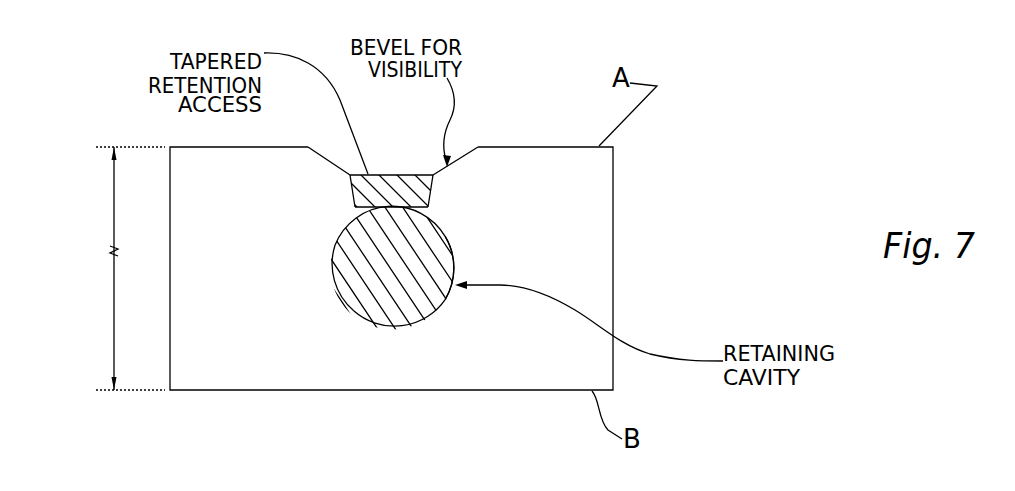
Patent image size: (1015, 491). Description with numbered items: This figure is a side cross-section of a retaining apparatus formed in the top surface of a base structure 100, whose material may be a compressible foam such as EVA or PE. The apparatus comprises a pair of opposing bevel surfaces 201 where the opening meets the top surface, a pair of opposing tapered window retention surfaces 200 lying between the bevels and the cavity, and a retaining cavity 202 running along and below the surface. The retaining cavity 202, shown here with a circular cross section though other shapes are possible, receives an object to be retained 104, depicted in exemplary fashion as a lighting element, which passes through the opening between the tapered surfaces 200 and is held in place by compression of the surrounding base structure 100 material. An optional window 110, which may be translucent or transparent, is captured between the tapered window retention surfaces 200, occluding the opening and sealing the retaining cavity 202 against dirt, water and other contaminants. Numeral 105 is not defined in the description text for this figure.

The base structure 100 is at (570, 210).
The object to be retained 104 is at (440, 310).
The retaining cavity 105 is at (344, 336).
The optional window 110 is at (384, 176).
The opposing tapered window retention surfaces 200 is at (352, 193).
The opposing bevel surfaces 201 is at (451, 163).
The retaining cavity 202 is at (455, 268).